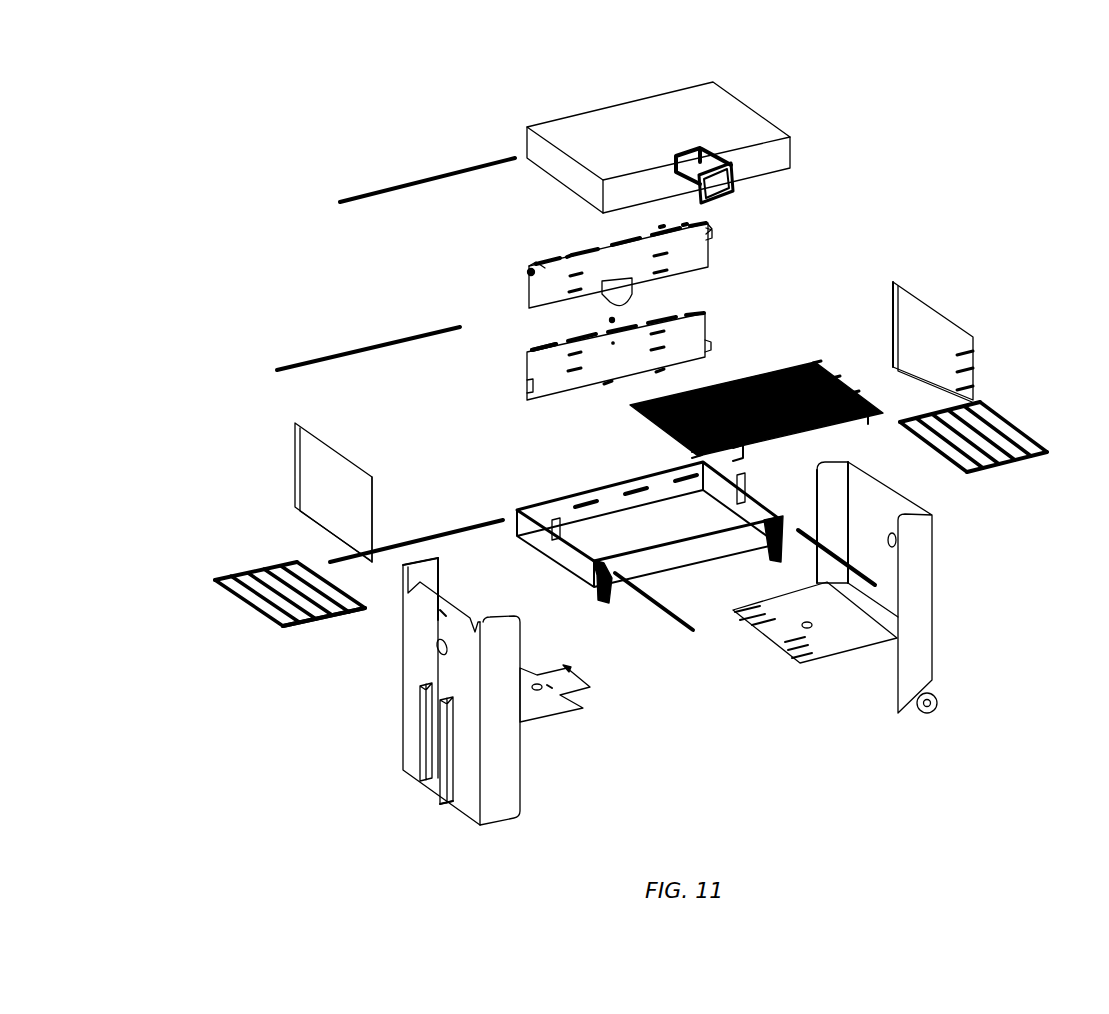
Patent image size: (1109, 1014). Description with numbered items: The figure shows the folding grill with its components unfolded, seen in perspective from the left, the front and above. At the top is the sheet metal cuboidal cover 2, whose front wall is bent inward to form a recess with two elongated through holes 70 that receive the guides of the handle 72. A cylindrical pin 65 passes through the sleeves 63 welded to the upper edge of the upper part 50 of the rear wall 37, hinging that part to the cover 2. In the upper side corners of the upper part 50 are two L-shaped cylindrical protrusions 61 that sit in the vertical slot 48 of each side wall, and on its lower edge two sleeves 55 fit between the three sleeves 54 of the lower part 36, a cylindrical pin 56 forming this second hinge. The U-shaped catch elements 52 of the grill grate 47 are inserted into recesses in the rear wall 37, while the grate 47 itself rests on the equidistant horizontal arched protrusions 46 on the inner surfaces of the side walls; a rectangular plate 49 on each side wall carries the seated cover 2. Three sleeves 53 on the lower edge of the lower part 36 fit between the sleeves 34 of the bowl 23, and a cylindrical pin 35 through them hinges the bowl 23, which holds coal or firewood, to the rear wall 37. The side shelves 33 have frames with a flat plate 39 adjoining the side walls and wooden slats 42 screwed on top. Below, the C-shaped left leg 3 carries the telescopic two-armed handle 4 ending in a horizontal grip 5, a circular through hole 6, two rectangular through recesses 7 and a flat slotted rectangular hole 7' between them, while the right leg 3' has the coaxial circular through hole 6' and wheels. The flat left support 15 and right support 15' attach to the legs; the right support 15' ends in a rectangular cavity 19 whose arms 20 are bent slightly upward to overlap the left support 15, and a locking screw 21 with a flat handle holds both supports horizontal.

The cover 2 is at (585, 122).
The elongated through holes 70 is at (703, 150).
The handle 72 is at (733, 168).
The cylindrical pin 65 is at (427, 177).
The sleeves 63 is at (683, 225).
The cylindrical protrusions 61 is at (710, 225).
The upper part 50 is at (533, 265).
The rear wall 37 is at (698, 260).
The sleeves 55 is at (618, 303).
The cylindrical pin 56 is at (335, 350).
The sleeves 54 is at (543, 347).
The lower part 36 is at (571, 356).
The rectangular plate 49 is at (360, 473).
The U-shaped catch elements 52 is at (680, 390).
The sleeves 53 is at (660, 368).
The grill grate 47 is at (855, 392).
The vertical slot 48 is at (897, 300).
The horizontal arched protrusions 46 is at (957, 390).
The side shelves 33 is at (1003, 433).
The sleeves 34 is at (683, 481).
The cylindrical pin 35 is at (340, 553).
The bowl 23 is at (568, 563).
The wooden slats 42 is at (290, 595).
The flat plate 39 is at (363, 605).
The rectangular through recesses 7 is at (379, 610).
The flat slotted rectangular hole 7' is at (383, 659).
The circular through hole 6 is at (384, 694).
The telescopic two-armed metal handle 4 is at (445, 750).
The grip 5 is at (448, 800).
The left leg 3 is at (484, 705).
The left support 15 is at (573, 732).
The locking screw 21 is at (567, 668).
The circular through hole 6' is at (974, 557).
The right leg 3' is at (938, 587).
The rectangular cavity 19 is at (780, 640).
The arms 20 is at (800, 663).
The right support 15' is at (835, 687).